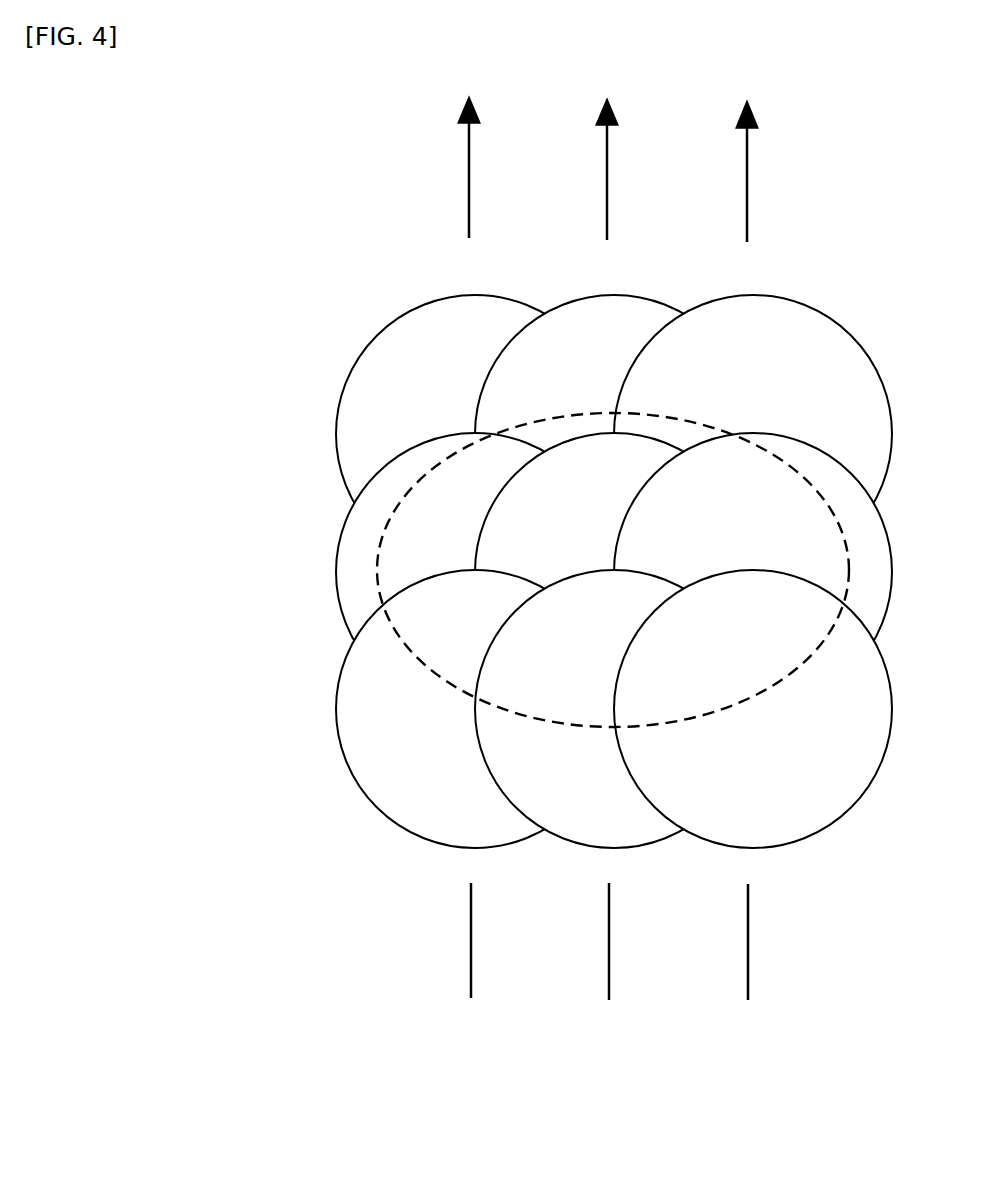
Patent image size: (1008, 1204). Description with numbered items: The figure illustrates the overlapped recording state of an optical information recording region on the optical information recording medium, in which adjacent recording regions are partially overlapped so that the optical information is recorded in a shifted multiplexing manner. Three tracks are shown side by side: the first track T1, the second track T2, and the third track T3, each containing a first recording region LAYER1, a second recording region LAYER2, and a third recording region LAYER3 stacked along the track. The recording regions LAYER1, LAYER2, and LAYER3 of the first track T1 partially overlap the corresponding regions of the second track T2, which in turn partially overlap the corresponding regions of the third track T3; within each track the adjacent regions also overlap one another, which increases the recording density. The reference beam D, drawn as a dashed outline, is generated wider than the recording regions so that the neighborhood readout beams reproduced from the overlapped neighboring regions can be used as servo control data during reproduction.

The first recording region LAYER1 is at (354, 714).
The second recording region LAYER2 is at (354, 564).
The third recording region LAYER3 is at (354, 406).
The reference beam D is at (437, 669).
The first track T1 is at (472, 571).
The second track T2 is at (613, 572).
The third track T3 is at (755, 572).